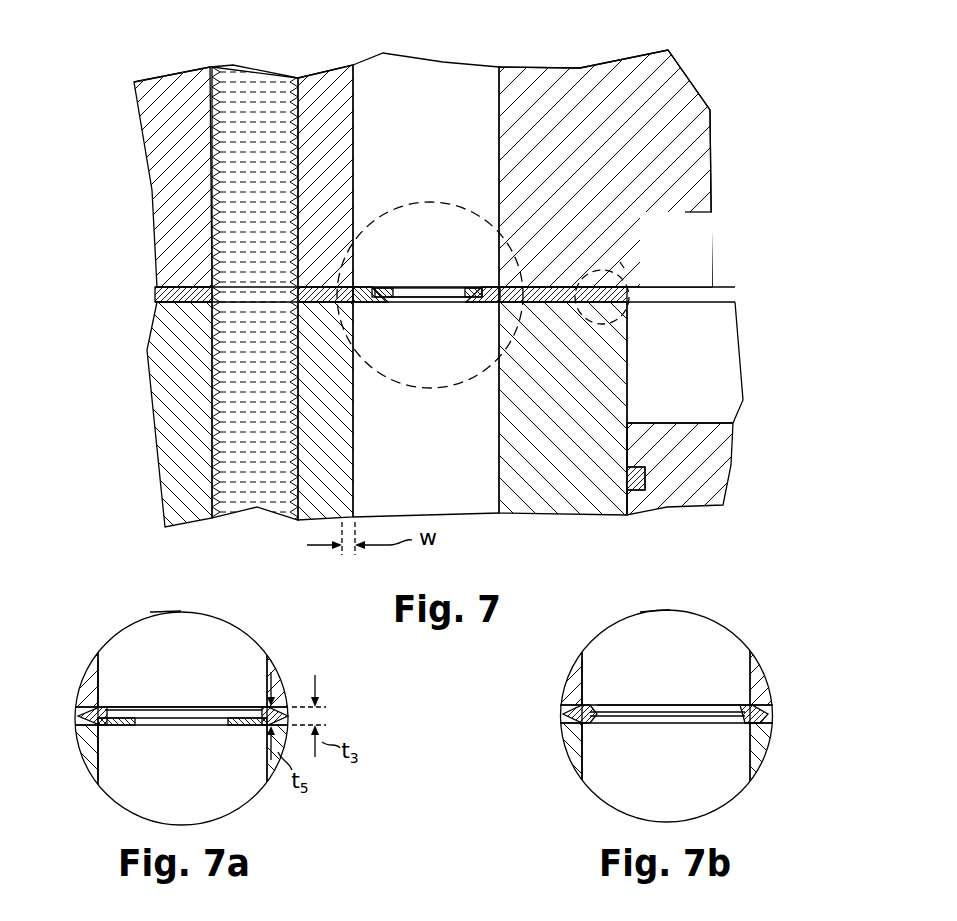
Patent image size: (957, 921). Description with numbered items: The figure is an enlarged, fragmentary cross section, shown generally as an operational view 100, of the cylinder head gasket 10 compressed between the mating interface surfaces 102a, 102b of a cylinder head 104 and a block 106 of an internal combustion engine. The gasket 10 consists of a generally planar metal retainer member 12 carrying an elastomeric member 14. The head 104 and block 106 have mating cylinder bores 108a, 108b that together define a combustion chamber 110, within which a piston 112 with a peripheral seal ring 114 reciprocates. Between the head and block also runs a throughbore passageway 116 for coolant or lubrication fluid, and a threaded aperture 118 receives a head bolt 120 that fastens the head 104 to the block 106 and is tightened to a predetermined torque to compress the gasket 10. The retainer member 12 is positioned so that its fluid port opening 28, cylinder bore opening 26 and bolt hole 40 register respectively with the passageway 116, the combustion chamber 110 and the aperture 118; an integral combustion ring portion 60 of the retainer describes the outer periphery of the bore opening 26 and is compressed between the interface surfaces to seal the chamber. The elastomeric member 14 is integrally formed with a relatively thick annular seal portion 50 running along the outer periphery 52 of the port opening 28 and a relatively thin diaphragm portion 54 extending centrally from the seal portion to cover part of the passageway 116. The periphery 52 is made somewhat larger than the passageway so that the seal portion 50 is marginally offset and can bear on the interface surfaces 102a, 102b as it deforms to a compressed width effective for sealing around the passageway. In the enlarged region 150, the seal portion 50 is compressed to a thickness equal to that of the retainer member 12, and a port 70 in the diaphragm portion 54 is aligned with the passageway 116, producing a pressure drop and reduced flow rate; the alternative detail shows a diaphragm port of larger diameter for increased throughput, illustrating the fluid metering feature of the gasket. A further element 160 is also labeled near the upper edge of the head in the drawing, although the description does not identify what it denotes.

In FIG. 7, the cylinder head gasket 10 is at (127, 282).
In FIG. 7, the retainer member 12 is at (147, 297).
In FIG. 7A, the retainer member 12 is at (78, 715).
In FIG. 7B, the retainer member 12 is at (562, 712).
In FIG. 7, the elastomeric member 14 is at (439, 275).
In FIG. 7A, the elastomeric member 14 is at (172, 671).
In FIG. 7B, the elastomeric member 14 is at (656, 681).
In FIG. 7, the cylinder bore opening 26 is at (650, 262).
In FIG. 7, the fluid port opening 28 is at (357, 286).
In FIG. 7A, the fluid port opening 28 is at (259, 735).
In FIG. 7B, the fluid port opening 28 is at (742, 735).
In FIG. 7, the bolt hole 40 is at (284, 297).
In FIG. 7, the seal portion 50 is at (482, 288).
In FIG. 7A, the seal portion 50 is at (280, 706).
In FIG. 7B, the seal portion 50 is at (765, 705).
In FIG. 7, the outer periphery 52 is at (502, 304).
In FIG. 7A, the diaphragm portion 54 is at (234, 722).
In FIG. 7, the combustion ring portion 60 is at (622, 262).
In FIG. 7A, the port 70 is at (199, 699).
In FIG. 7B, the port 70 is at (686, 698).
In FIG. 7, the operational view 100 is at (759, 59).
In FIG. 7, the interface surface of cylinder head 102a is at (735, 288).
In FIG. 7A, the interface surface of cylinder head 102a is at (98, 704).
In FIG. 7B, the interface surface of cylinder head 102a is at (583, 703).
In FIG. 7, the interface surface of block 102b is at (736, 303).
In FIG. 7A, the interface surface of block 102b is at (98, 735).
In FIG. 7B, the interface surface of block 102b is at (583, 732).
In FIG. 7, the cylinder head 104 is at (140, 120).
In FIG. 7, the block 106 is at (148, 452).
In FIG. 7, the cylinder bore of head 108a is at (704, 280).
In FIG. 7, the cylinder bore of block 108b is at (732, 400).
In FIG. 7, the combustion chamber 110 is at (686, 357).
In FIG. 7, the piston 112 is at (735, 468).
In FIG. 7, the peripheral seal ring 114 is at (626, 478).
In FIG. 7, the throughbore passageway 116 is at (402, 499).
In FIG. 7A, the throughbore passageway 116 is at (212, 804).
In FIG. 7B, the throughbore passageway 116 is at (694, 802).
In FIG. 7, the threaded aperture 118 is at (304, 66).
In FIG. 7, the head bolt 120 is at (243, 66).
In FIG. 7, the enlarged section of assembly 150 is at (425, 203).
In FIG. 7A, the enlarged section of assembly 150 is at (176, 611).
In FIG. 7B, the enlarged section of assembly 150 is at (655, 611).
In FIG. 7, the outer edge 160 is at (584, 262).